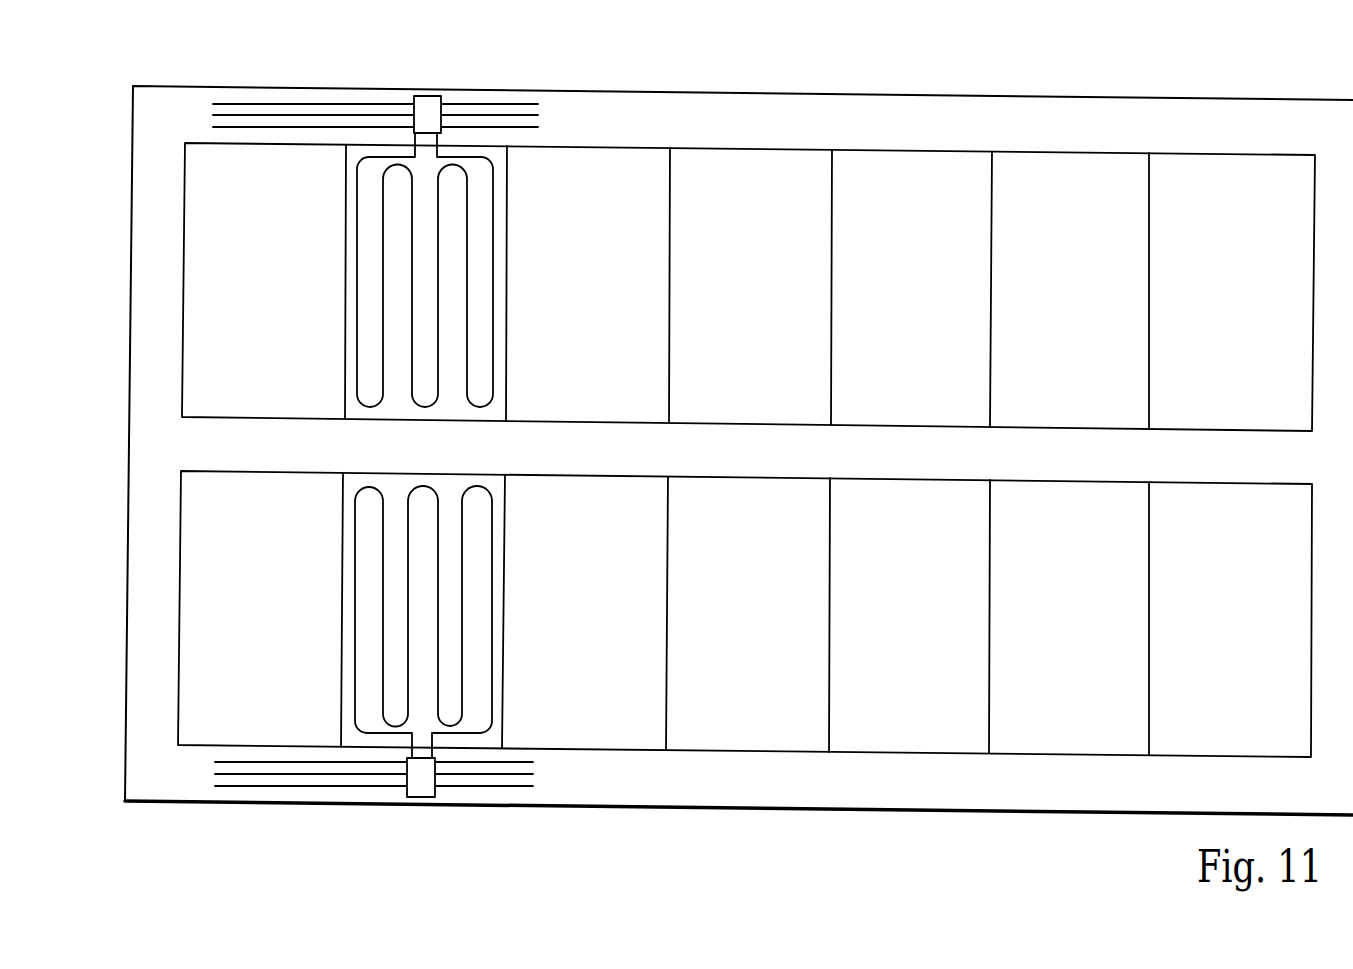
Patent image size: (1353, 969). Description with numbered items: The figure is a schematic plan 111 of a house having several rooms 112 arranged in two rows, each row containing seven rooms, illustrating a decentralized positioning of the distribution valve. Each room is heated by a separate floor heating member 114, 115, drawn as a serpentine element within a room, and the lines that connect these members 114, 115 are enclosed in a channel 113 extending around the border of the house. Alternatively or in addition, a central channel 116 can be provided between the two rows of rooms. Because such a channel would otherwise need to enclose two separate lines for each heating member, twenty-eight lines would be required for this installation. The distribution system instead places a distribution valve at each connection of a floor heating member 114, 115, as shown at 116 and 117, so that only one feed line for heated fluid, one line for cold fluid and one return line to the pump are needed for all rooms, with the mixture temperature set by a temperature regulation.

The plan 111 is at (760, 92).
The rooms 112 is at (596, 184).
The channel 113 is at (313, 87).
The floor heating member 114 is at (491, 186).
The floor heating member 115 is at (488, 688).
The central channel 116 is at (428, 99).
The distribution valve 117 is at (423, 800).